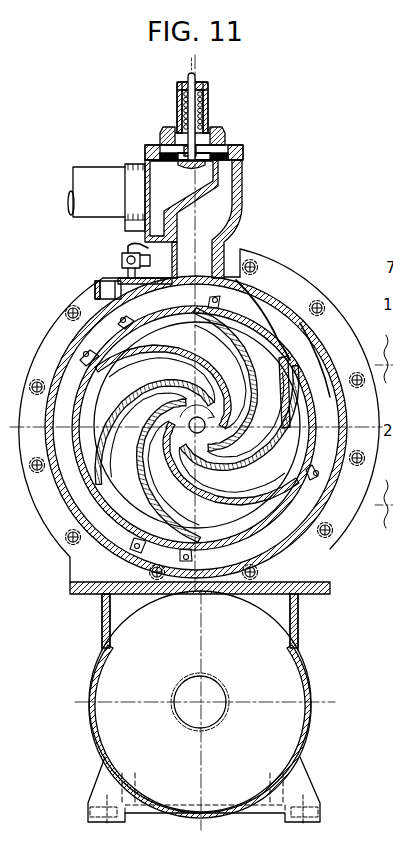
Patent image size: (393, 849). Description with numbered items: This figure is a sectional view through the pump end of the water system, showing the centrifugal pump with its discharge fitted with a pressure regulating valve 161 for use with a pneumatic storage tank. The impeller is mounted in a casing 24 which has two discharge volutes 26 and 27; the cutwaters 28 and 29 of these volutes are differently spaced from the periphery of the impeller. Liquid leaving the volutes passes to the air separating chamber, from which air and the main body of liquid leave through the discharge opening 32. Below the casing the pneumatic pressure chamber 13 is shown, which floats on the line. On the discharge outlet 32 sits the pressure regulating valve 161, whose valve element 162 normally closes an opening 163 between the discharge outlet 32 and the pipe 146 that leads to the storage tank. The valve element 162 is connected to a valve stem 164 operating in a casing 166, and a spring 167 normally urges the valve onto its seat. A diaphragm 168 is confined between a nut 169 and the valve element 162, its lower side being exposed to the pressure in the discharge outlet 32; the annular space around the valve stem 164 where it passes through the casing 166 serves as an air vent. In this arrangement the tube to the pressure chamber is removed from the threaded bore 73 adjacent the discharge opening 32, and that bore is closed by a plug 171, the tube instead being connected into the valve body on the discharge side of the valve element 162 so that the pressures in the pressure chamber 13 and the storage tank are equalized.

The pneumatic pressure chamber 13 is at (202, 706).
The casing 24 is at (303, 325).
The discharge volute 26 is at (83, 480).
The discharge volute 27 is at (272, 327).
The cutwater 28 is at (87, 453).
The cutwater 29 is at (290, 360).
The discharge opening 32 is at (222, 245).
The threaded bore 73 is at (112, 268).
The pipe 146 is at (87, 163).
The pressure regulating valve 161 is at (264, 147).
The valve element 162 is at (208, 165).
The opening 163 is at (217, 187).
The valve stem 164 is at (197, 107).
The casing 166 is at (178, 105).
The spring 167 is at (180, 87).
The diaphragm 168 is at (167, 150).
The nut 169 is at (217, 128).
The plug 171 is at (93, 290).